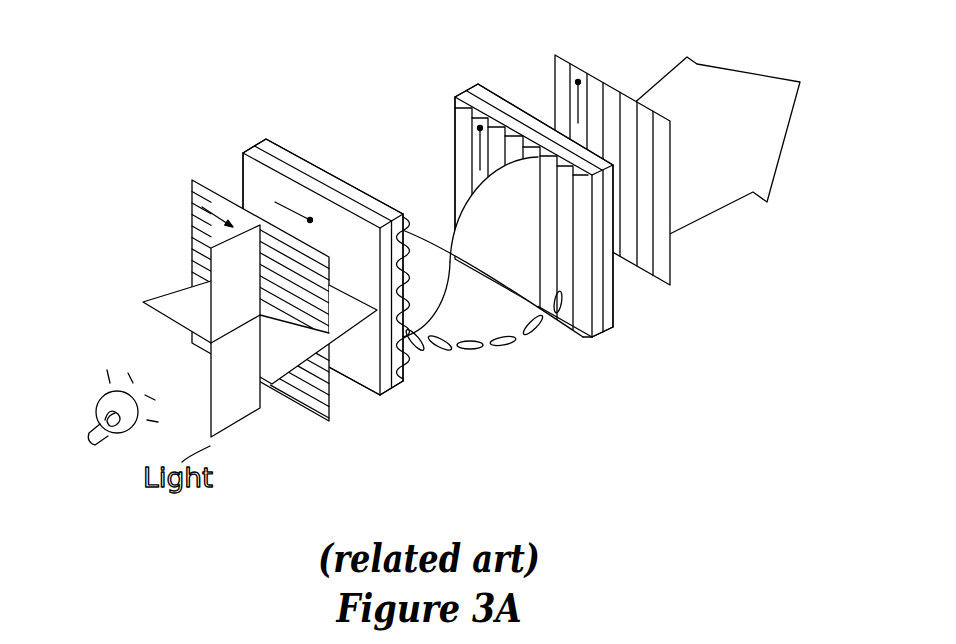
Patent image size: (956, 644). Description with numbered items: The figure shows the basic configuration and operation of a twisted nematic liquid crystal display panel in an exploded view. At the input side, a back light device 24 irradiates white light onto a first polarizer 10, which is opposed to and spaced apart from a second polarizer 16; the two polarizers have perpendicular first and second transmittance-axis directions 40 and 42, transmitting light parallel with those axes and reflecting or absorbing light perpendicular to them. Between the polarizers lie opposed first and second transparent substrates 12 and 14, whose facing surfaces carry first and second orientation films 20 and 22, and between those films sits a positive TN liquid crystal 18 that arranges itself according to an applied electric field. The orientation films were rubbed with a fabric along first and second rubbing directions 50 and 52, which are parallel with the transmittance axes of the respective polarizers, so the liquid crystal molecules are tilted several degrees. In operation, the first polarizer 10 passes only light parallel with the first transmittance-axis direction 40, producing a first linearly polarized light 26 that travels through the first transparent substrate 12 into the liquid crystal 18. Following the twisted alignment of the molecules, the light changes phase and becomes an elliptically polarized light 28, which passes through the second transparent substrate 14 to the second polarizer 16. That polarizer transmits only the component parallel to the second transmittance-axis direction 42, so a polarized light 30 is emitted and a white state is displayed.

The first polarizer 10 is at (197, 203).
The first transparent substrate 12 is at (385, 392).
The second transparent substrate 14 is at (613, 318).
The second polarizer 16 is at (666, 239).
The positive TN liquid crystal 18 is at (497, 347).
The first orientation film 20 is at (322, 168).
The second orientation film 22 is at (589, 340).
The back light device 24 is at (102, 392).
The first linearly polarized light 26 is at (348, 332).
The elliptically polarized light 28 is at (452, 212).
The polarized light 30 is at (746, 70).
The first transmittance-axis direction 40 is at (212, 207).
The second transmittance-axis direction 42 is at (590, 77).
The first rubbing direction 50 is at (287, 202).
The second rubbing direction 52 is at (483, 123).